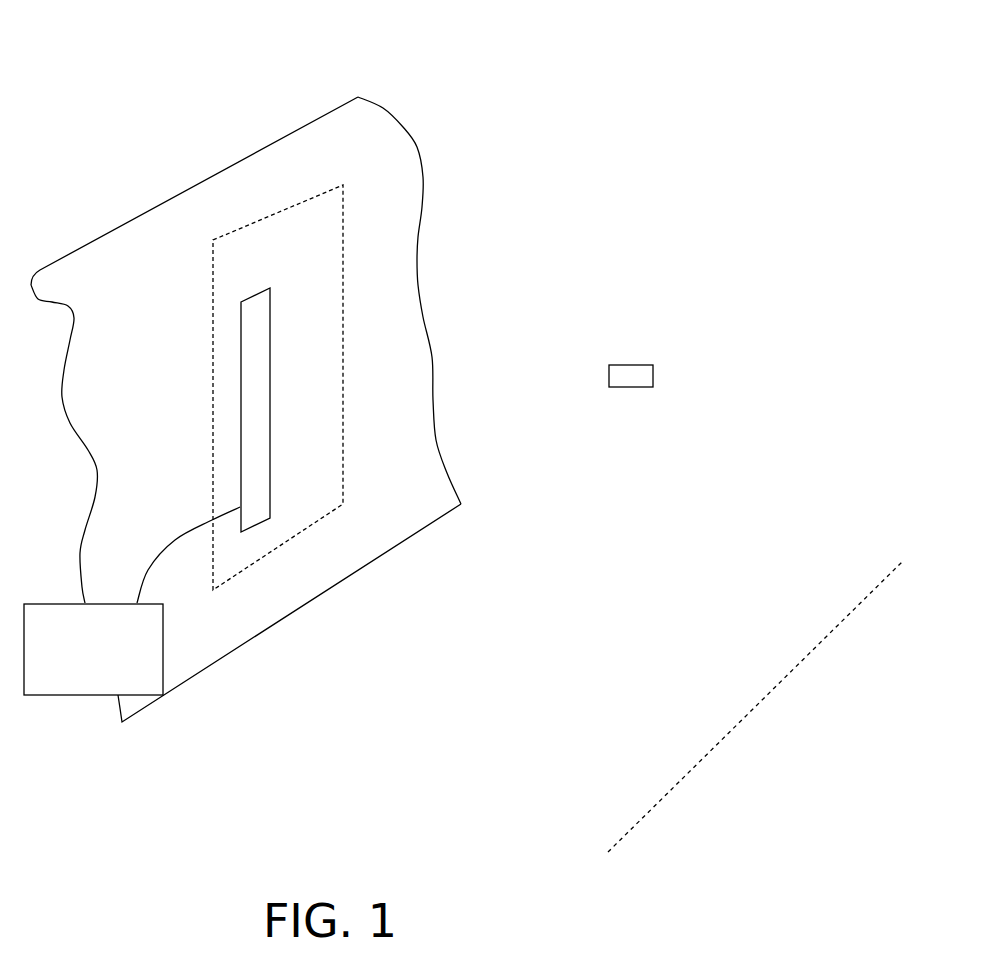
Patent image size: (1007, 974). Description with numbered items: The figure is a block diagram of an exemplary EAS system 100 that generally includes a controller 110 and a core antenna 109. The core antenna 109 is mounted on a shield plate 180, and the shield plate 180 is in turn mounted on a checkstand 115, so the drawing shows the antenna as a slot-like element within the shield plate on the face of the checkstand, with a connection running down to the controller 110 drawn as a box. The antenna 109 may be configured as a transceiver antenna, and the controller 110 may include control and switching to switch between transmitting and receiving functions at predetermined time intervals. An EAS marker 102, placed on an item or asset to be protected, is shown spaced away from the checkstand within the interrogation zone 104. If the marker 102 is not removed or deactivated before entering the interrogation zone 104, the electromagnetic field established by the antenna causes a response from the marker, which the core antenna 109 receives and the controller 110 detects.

The EAS system 100 is at (97, 97).
The EAS marker 102 is at (655, 372).
The interrogation zone 104 is at (617, 246).
The core antenna 109 is at (270, 445).
The controller 110 is at (68, 697).
The checkstand 115 is at (387, 138).
The shield plate 180 is at (345, 270).